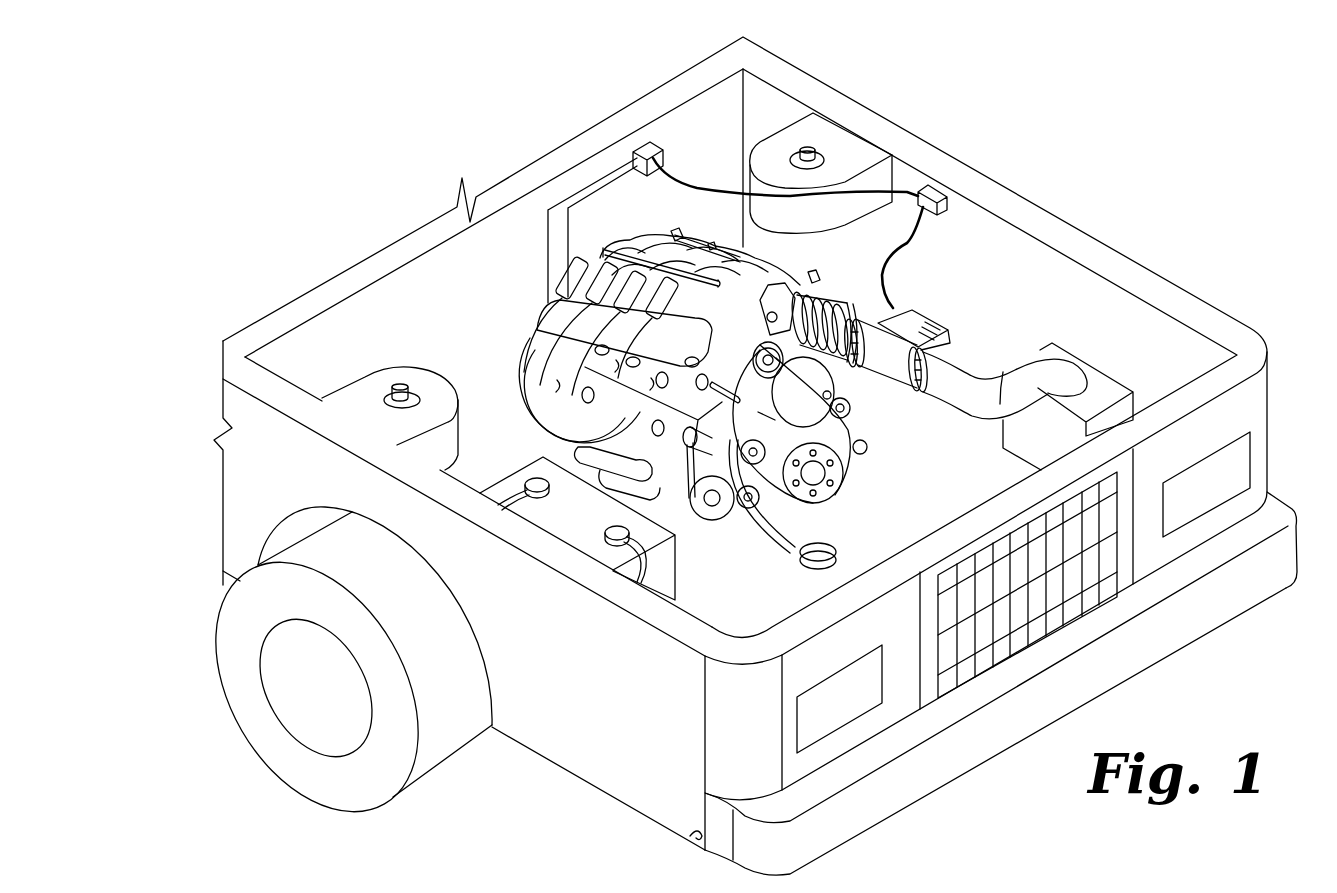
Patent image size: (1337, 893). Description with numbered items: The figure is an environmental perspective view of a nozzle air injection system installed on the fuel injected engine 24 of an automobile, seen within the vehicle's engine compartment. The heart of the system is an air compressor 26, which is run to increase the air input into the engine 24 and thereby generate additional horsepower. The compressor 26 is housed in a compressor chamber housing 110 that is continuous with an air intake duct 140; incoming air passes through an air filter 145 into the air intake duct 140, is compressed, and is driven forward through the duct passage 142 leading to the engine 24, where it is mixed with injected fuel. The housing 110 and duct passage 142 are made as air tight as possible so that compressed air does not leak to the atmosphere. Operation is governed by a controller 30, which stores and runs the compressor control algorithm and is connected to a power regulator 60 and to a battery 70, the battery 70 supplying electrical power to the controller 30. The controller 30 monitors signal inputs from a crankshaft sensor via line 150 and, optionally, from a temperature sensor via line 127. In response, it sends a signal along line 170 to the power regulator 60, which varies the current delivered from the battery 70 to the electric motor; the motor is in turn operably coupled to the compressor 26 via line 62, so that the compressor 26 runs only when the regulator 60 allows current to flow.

The fuel injected engine 24 is at (478, 302).
The air compressor 26 is at (942, 292).
The controller 30 is at (656, 158).
The power regulator 60 is at (935, 184).
The line 62 is at (930, 234).
The battery 70 is at (668, 580).
The compressor chamber housing 110 is at (900, 390).
The line 127 is at (557, 208).
The air intake duct 140 is at (976, 362).
The duct passage 142 is at (843, 282).
The air filter 145 is at (1108, 380).
The line 150 is at (595, 190).
The line 170 is at (905, 192).